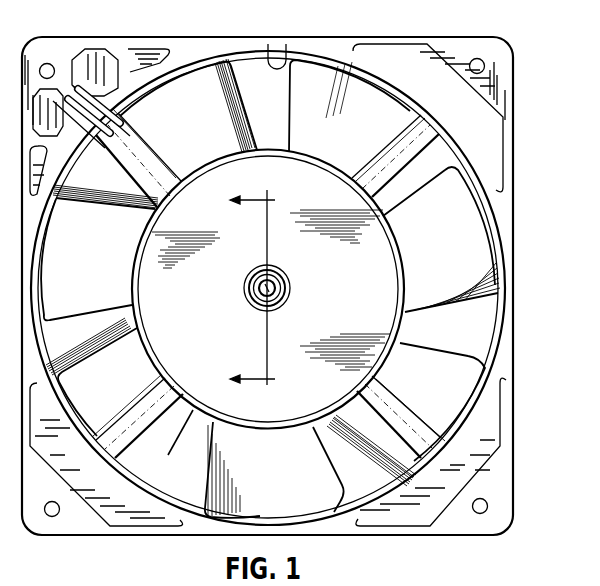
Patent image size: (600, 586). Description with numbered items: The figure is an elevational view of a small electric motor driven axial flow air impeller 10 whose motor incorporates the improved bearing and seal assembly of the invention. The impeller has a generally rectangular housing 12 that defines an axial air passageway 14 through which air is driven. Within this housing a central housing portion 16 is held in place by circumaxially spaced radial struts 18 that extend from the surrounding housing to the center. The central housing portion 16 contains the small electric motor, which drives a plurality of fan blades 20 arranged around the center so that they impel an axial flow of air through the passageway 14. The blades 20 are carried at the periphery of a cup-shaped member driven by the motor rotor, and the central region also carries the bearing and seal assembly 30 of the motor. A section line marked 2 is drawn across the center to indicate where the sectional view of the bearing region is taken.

The electric motor driven axial flow air impeller 10 is at (556, 218).
The housing 12 is at (505, 108).
The axial air passageway 14 is at (278, 55).
The central housing portion 16 is at (357, 306).
The radial struts 18 is at (147, 152).
The fan blades 20 is at (213, 72).
The bearing shaft 30 is at (262, 288).
The section line 2- 2 is at (259, 289).